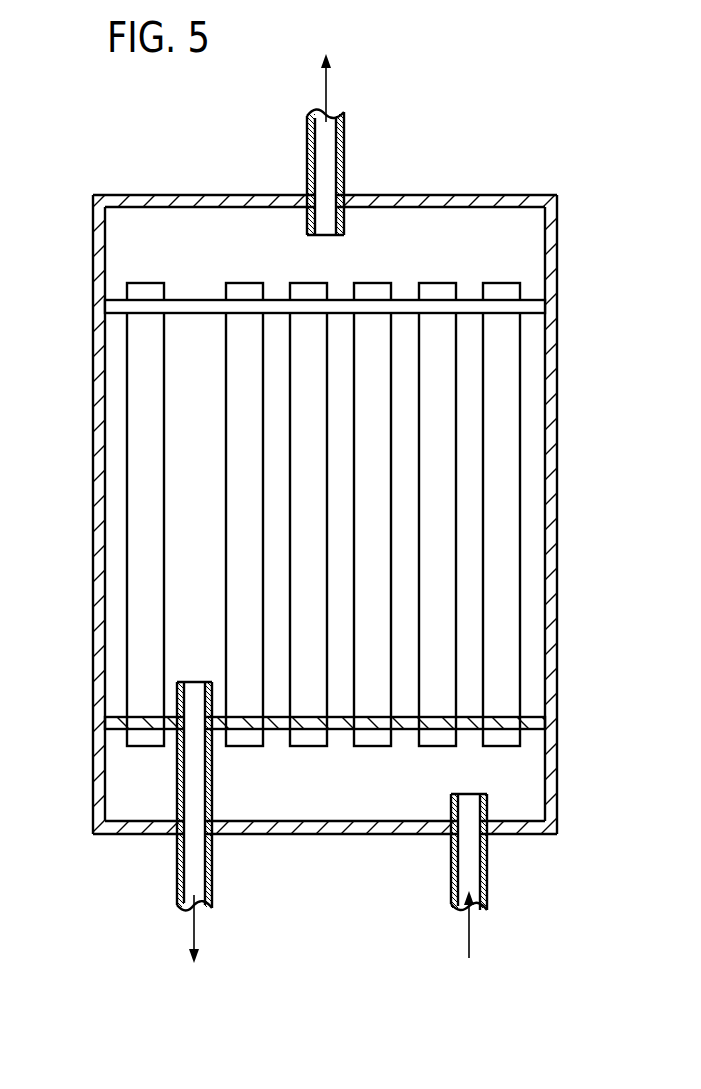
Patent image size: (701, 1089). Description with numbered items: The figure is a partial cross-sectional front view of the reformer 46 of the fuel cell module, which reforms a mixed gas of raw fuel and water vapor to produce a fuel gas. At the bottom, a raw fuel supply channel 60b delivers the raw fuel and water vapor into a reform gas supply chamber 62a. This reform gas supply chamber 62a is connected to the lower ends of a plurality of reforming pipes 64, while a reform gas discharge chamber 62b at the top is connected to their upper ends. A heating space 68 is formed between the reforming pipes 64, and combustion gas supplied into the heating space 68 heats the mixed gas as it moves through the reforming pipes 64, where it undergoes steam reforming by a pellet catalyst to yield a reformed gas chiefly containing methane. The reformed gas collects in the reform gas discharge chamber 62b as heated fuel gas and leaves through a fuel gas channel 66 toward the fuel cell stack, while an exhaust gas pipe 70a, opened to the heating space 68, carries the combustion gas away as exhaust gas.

The reformer 46 is at (228, 120).
The raw fuel supply channel 60b is at (470, 872).
The reform gas supply chamber 62a is at (321, 800).
The reform gas discharge chamber 62b is at (471, 230).
The reforming pipes 64 is at (437, 367).
The fuel gas channel 66 is at (345, 148).
The heating space 68 is at (187, 415).
The exhaust gas pipe 70a is at (190, 863).